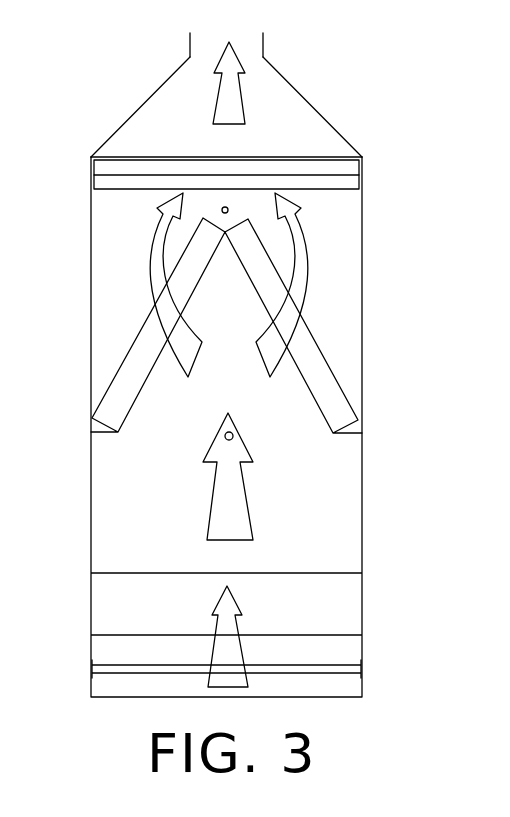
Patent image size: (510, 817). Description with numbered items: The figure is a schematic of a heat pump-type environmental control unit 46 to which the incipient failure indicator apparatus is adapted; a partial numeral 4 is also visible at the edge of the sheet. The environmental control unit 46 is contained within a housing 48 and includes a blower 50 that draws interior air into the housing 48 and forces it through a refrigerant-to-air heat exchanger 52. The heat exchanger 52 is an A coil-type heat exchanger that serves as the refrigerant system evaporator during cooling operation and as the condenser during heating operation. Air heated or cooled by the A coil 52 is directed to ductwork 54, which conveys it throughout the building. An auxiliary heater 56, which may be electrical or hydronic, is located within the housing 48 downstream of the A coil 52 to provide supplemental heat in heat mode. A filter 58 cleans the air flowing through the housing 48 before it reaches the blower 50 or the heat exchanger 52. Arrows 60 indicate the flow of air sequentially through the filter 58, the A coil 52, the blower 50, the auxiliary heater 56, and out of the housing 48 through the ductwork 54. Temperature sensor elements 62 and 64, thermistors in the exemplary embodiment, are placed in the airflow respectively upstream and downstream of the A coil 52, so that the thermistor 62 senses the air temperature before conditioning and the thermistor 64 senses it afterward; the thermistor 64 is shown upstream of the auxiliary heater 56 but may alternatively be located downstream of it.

The environmental control unit 46 is at (335, 90).
The housing 48 is at (90, 323).
The blower 50 is at (350, 183).
The refrigerant-to-air heat exchanger 52 is at (128, 383).
The ductwork 54 is at (190, 44).
The auxiliary heater 56 is at (103, 165).
The filter 58 is at (90, 666).
The arrows 60 is at (223, 105).
The temperature sensor element 62 is at (233, 432).
The temperature sensor element 64 is at (227, 208).
The partial numeral 4 is at (5, 223).